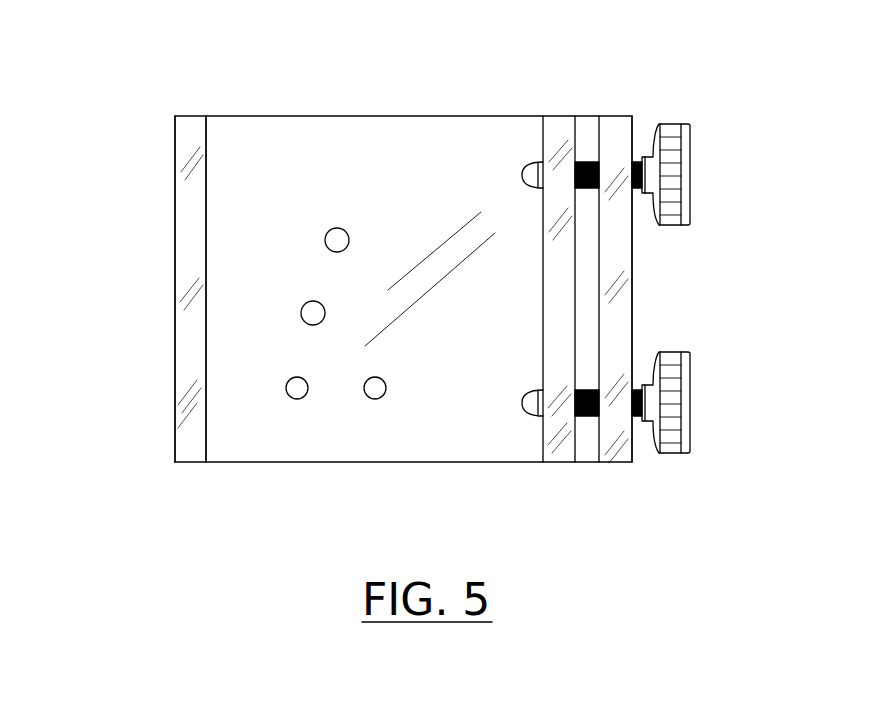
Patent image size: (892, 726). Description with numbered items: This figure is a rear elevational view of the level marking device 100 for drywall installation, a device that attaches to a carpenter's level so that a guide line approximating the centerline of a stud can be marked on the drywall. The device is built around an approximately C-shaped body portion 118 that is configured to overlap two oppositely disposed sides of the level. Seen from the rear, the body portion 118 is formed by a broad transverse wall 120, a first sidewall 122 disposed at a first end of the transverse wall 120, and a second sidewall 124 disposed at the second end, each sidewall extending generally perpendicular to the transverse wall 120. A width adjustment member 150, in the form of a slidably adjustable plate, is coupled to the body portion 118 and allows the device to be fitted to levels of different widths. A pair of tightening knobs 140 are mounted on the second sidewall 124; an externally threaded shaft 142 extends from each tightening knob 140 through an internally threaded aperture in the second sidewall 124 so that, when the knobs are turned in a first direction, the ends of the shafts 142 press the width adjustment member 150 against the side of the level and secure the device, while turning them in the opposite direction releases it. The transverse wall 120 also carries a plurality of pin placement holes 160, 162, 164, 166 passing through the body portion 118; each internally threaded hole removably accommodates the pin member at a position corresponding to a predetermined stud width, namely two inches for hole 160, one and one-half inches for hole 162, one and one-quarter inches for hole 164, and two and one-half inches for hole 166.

The level marking device 100 is at (616, 518).
The body portion 118 is at (235, 415).
The transverse wall 120 is at (352, 155).
The first sidewall 122 is at (190, 140).
The second sidewall 124 is at (613, 140).
The tightening knob 140 is at (688, 420).
The externally threaded shaft 142 is at (590, 160).
The width adjustment member 150 is at (560, 128).
The pin placement hole 160 is at (343, 247).
The pin placement hole 162 is at (318, 322).
The pin placement hole 164 is at (288, 398).
The pin placement hole 166 is at (370, 398).